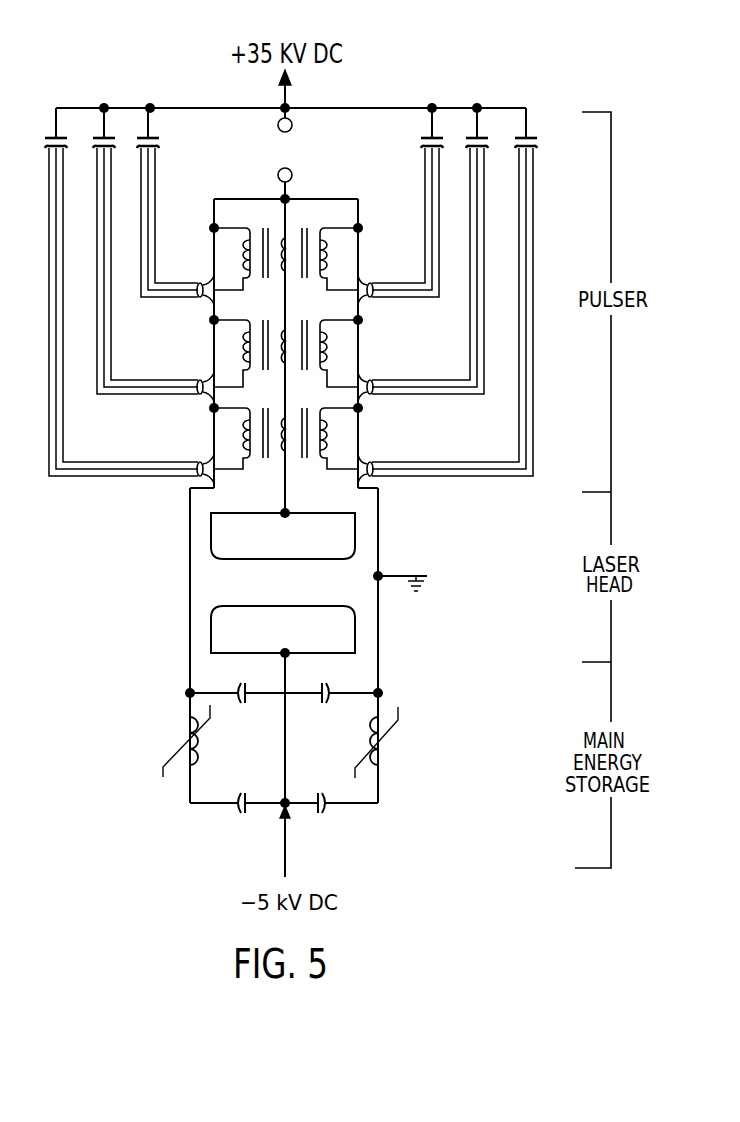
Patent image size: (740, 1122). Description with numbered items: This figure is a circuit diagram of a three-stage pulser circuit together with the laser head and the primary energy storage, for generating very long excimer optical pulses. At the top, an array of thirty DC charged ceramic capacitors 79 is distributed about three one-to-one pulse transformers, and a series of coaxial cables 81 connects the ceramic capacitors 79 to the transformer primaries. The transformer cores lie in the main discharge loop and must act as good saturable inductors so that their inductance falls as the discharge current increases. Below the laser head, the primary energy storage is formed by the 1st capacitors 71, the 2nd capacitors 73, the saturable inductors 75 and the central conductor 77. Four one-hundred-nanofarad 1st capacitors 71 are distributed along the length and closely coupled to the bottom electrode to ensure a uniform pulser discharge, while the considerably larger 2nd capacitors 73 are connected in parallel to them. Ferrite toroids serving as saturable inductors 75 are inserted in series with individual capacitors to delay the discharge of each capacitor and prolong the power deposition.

The 1st capacitors 71 is at (250, 686).
The 2nd capacitors 73 is at (318, 815).
The saturable inductors 75 is at (182, 730).
The central conductor 77 is at (285, 748).
The DC charged ceramic capacitors 79 is at (440, 135).
The RG-8 coaxial cables 81 is at (438, 223).